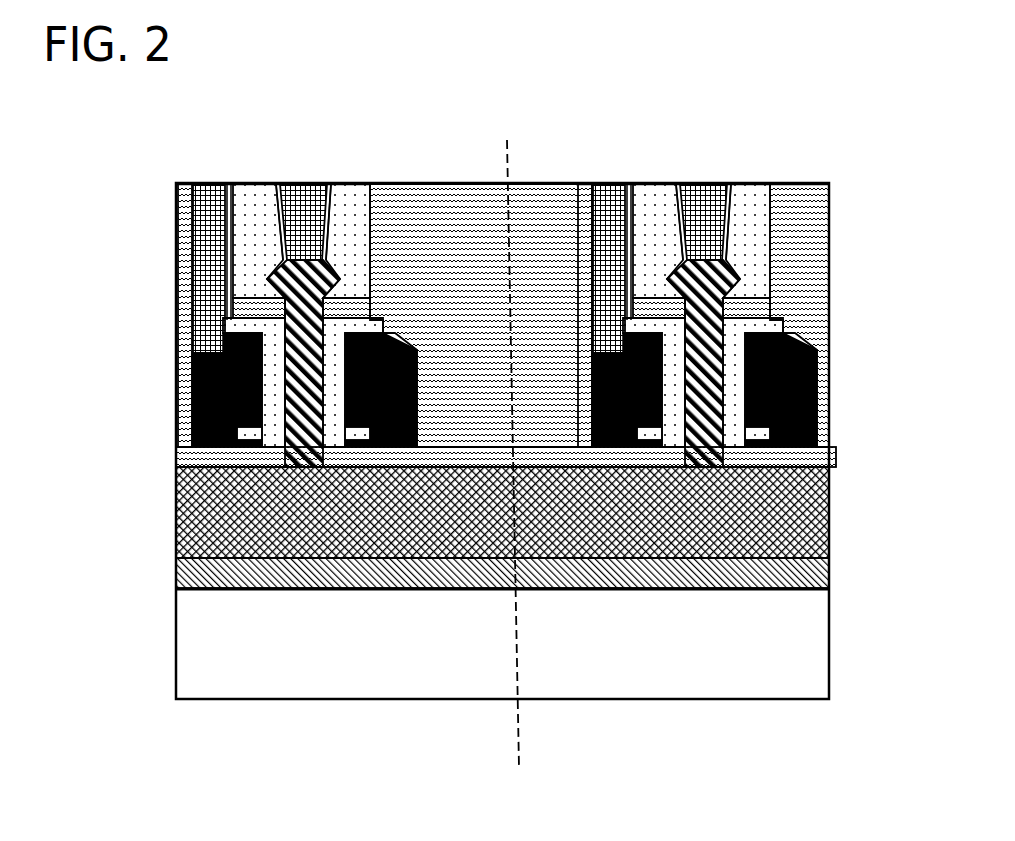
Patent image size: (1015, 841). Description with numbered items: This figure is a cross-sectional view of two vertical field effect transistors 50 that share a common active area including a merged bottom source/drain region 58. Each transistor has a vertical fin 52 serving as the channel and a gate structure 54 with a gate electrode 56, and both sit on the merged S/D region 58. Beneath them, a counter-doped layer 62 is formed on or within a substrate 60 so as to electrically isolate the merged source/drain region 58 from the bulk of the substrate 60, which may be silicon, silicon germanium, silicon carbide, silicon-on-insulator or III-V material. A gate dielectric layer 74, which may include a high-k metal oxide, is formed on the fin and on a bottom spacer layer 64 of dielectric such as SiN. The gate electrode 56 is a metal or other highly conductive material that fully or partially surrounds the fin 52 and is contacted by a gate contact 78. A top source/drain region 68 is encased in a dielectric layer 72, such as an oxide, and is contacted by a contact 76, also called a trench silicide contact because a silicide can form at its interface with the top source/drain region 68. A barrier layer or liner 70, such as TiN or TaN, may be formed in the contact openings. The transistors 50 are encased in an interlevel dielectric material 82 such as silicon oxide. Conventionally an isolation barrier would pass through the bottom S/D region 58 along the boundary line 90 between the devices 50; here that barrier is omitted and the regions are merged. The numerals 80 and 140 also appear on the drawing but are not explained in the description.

The vertical field effect transistor 50 is at (303, 160).
The vertical fin 52 is at (703, 413).
The gate structure 54 is at (810, 369).
The gate electrode 56 is at (192, 388).
The merged source/drain region 58 is at (190, 500).
The substrate 60 is at (190, 653).
The counter-doped layer 62 is at (190, 571).
The bottom spacer layer 64 is at (178, 458).
The top source/drain region 68 is at (280, 284).
The liner 70 is at (190, 245).
The dielectric layer 72 is at (349, 217).
The gate dielectric layer 74 is at (770, 323).
The contact 76 is at (240, 183).
The gate contact 78 is at (180, 199).
The cap layer 80 is at (743, 305).
The interlevel dielectric material 82 is at (470, 224).
The boundary line 90 is at (517, 592).
The etch stop layer extension 140 is at (835, 460).